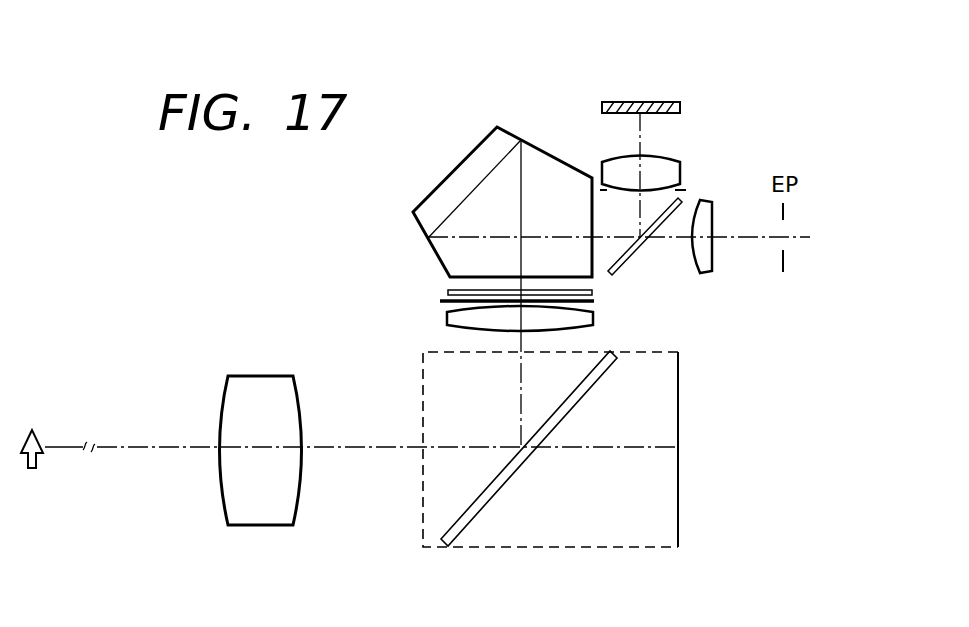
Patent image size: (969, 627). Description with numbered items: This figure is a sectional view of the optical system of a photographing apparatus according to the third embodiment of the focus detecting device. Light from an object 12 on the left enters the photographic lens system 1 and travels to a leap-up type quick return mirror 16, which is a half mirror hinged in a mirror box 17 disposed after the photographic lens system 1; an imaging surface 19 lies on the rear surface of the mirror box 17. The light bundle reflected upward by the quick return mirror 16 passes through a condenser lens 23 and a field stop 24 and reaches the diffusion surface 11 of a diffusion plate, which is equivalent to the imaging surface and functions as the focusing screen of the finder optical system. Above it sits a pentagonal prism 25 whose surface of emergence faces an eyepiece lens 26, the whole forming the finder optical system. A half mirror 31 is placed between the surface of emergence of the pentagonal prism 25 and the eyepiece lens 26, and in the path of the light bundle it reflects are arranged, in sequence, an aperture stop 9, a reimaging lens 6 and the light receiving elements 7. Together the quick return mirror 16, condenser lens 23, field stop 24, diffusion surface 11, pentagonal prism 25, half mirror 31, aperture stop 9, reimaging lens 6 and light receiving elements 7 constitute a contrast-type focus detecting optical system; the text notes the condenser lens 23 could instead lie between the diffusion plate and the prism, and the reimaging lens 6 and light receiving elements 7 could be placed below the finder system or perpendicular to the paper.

The photographic lens system 1 is at (252, 375).
The reimaging lens 6 is at (668, 162).
The light receiving elements 7 is at (682, 102).
The aperture stop 9 is at (684, 190).
The diffusion surface 11 is at (450, 292).
The object 12 is at (36, 437).
The quick return mirror 16 is at (592, 392).
The mirror box 17 is at (420, 403).
The imaging surface 19 is at (680, 432).
The condenser lens 23 is at (448, 312).
The field stop 24 is at (595, 301).
The pentagonal prism 25 is at (500, 142).
The eyepiece lens 26 is at (710, 265).
The half mirror 31 is at (633, 253).